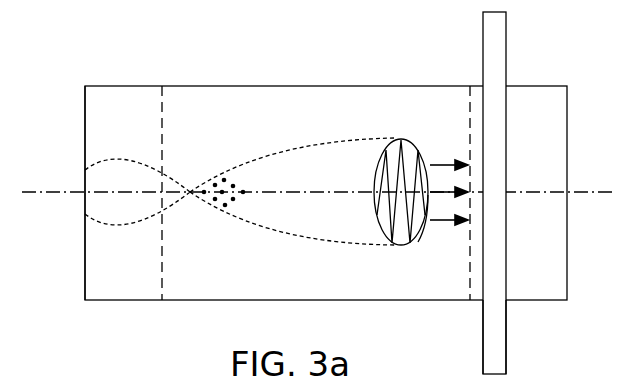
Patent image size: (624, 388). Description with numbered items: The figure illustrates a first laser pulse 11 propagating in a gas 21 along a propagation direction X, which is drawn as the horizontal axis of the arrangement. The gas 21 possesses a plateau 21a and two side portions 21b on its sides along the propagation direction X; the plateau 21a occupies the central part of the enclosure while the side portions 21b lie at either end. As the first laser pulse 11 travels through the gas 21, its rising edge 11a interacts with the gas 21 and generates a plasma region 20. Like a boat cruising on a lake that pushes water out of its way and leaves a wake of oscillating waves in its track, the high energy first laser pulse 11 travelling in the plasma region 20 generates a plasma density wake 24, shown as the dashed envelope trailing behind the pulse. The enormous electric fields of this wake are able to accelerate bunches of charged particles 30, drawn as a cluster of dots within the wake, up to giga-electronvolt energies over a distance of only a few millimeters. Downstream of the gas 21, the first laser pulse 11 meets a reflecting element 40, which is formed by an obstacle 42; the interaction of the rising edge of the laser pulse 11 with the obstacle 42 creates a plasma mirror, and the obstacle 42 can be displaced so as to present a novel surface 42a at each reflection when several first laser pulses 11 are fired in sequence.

The propagation direction X is at (47, 189).
The gas 21 is at (314, 67).
The plateau 21a is at (200, 85).
The side portions 21b is at (112, 85).
The plasma density wake 24 is at (268, 150).
The plasma region 20 is at (312, 235).
The bunches of charged particles 30 is at (239, 218).
The first laser pulse 11 is at (412, 143).
The rising edge 11a is at (429, 245).
The reflecting element 40 is at (465, 57).
The obstacle 42 is at (505, 359).
The surface 42a is at (465, 329).